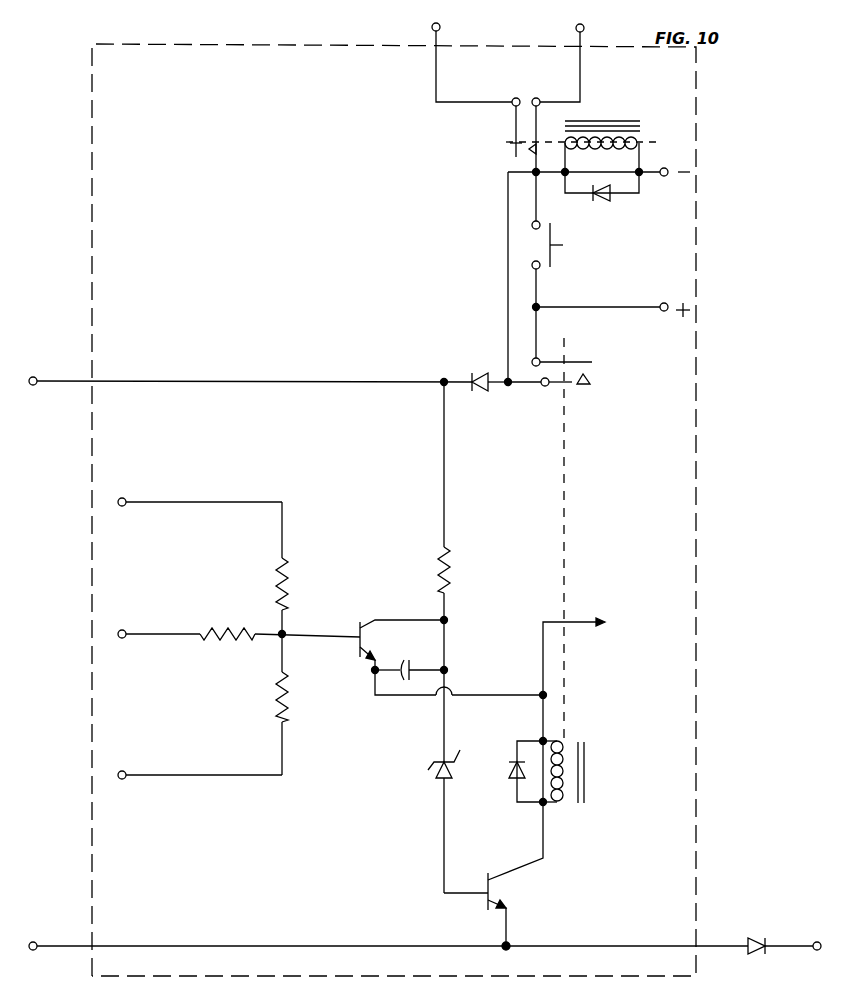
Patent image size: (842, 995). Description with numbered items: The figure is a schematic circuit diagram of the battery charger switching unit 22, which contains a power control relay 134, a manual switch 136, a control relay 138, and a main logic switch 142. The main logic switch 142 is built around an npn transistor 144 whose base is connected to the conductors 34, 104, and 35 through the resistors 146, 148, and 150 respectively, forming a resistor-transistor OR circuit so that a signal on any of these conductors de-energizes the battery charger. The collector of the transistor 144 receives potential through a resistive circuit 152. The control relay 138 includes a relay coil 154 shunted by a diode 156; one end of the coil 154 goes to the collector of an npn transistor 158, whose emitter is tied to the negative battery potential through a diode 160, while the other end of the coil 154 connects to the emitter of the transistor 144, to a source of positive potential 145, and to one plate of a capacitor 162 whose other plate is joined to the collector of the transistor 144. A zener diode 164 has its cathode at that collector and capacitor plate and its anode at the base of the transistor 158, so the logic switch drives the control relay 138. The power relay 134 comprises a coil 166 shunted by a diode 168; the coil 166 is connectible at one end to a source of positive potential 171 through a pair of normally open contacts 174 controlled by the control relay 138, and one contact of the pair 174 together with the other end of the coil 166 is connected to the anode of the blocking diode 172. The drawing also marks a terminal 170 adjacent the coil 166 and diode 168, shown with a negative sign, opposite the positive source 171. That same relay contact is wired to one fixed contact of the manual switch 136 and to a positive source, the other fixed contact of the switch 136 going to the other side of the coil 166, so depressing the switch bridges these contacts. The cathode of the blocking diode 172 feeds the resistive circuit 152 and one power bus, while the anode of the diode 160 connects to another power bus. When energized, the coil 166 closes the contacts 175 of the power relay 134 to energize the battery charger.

The battery charger switching unit 22 is at (298, 86).
The conductor 34 is at (250, 501).
The conductor 35 is at (231, 775).
The conductor 104 is at (185, 634).
The power control relay 134 is at (626, 129).
The manual switch 136 is at (559, 262).
The control relay 138 is at (545, 765).
The main logic switch 142 is at (400, 602).
The npn transistor 144 is at (358, 648).
The source of positive potential 145 is at (605, 620).
The resistor 146 is at (278, 577).
The resistor 148 is at (240, 642).
The resistor 150 is at (287, 704).
The resistive circuit 152 is at (449, 586).
The relay coil 154 is at (564, 805).
The diode 156 is at (511, 784).
The npn transistor 158 is at (486, 902).
The diode 160 is at (756, 940).
The capacitor 162 is at (427, 640).
The zener diode 164 is at (440, 781).
The coil 166 is at (640, 141).
The diode 168 is at (601, 198).
The negative terminal 170 is at (667, 176).
The source of positive potential 171 is at (667, 303).
The blocking diode 172 is at (487, 372).
The normally open contacts 174 is at (596, 374).
The contacts 175 is at (512, 129).